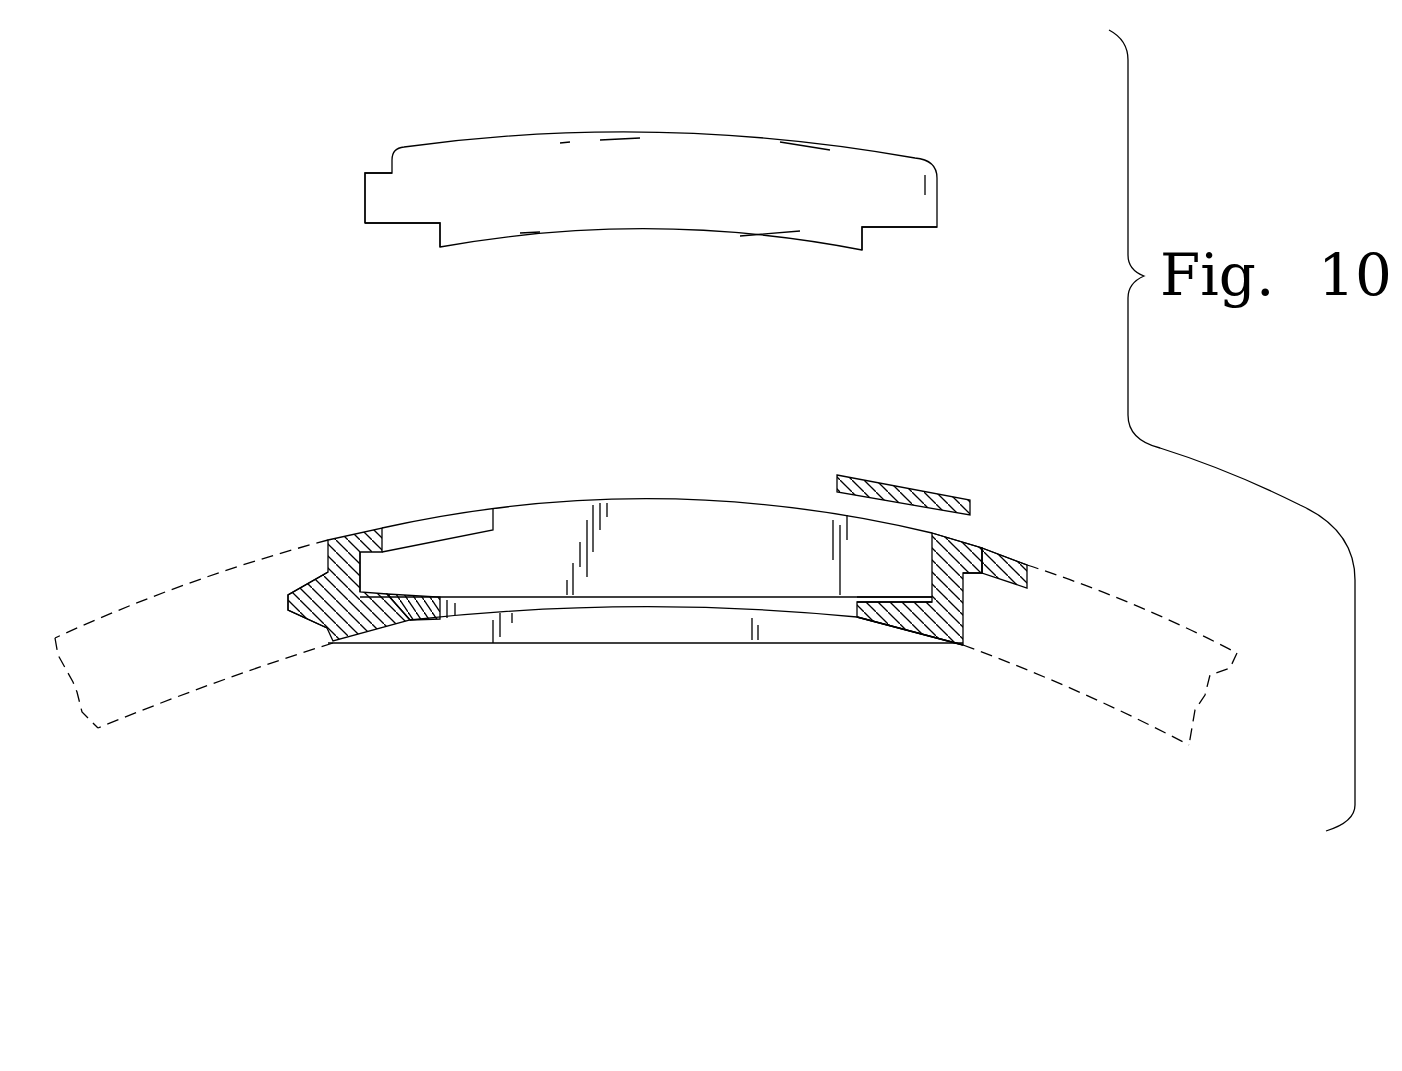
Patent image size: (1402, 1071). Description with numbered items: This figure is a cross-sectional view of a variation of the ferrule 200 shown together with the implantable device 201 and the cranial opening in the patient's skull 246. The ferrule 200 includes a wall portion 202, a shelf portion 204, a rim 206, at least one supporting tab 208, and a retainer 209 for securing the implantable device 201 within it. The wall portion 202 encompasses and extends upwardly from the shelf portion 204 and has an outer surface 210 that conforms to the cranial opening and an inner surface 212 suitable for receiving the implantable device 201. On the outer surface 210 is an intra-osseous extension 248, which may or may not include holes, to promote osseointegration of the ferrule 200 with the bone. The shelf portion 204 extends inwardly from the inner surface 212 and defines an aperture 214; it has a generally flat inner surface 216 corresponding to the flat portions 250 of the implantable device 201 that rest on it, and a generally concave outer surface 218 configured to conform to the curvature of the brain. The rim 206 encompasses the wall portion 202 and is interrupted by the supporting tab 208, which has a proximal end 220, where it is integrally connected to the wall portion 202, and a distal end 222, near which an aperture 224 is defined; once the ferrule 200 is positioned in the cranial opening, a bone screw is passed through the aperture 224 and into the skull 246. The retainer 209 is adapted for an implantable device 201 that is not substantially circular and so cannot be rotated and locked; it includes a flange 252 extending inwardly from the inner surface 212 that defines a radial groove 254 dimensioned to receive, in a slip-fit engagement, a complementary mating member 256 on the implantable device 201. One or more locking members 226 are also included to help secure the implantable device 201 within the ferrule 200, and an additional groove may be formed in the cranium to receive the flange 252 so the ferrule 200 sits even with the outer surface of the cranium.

The ferrule 200 is at (962, 365).
The implantable device 201 is at (672, 190).
The wall portion 202 is at (965, 617).
The shelf portion 204 is at (895, 625).
The rim 206 is at (940, 532).
The supporting tab 208 is at (1018, 556).
The retainer 209 is at (320, 493).
The outer surface 210 is at (323, 557).
The inner surface 212 is at (363, 568).
The aperture 214 is at (538, 602).
The inner surface 216 is at (880, 597).
The outer surface 218 is at (870, 625).
The proximal end 220 is at (932, 544).
The distal end 222 is at (1045, 600).
The aperture 224 is at (997, 560).
The locking member 226 is at (880, 476).
The skull 246 is at (163, 585).
The intra-osseous extension 248 is at (302, 615).
The flat portions 250 is at (393, 225).
The flange 252 is at (372, 527).
The radial groove 254 is at (410, 618).
The mating member 256 is at (365, 188).